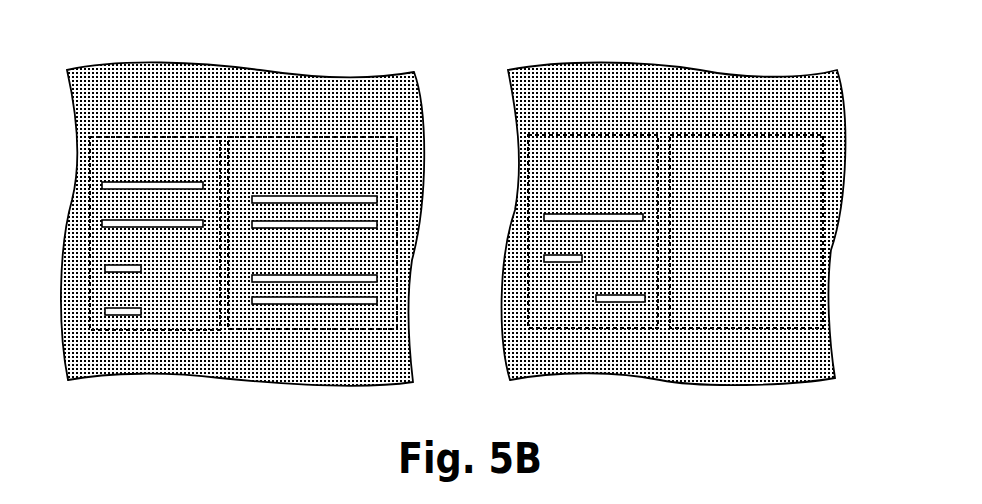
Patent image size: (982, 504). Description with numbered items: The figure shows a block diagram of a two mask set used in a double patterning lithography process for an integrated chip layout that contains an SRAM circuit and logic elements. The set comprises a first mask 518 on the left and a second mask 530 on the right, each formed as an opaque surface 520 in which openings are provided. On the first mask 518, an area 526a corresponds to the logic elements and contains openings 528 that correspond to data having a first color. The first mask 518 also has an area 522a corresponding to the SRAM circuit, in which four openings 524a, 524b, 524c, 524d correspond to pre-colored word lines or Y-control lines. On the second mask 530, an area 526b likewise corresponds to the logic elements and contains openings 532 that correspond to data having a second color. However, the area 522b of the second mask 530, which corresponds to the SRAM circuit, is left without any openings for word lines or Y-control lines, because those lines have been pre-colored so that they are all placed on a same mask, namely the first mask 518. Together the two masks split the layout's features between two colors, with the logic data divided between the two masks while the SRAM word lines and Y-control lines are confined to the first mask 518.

The first mask 518 is at (100, 32).
The second mask 530 is at (535, 25).
The opaque surface 520 is at (412, 78).
The area 522a is at (348, 137).
The area 522b is at (773, 135).
The area 526a is at (200, 137).
The area 526b is at (632, 135).
The opening 524a is at (380, 198).
The opening 524b is at (380, 223).
The opening 524c is at (380, 277).
The opening 524d is at (380, 299).
The openings 528 is at (158, 257).
The trace pattern 532 is at (592, 255).